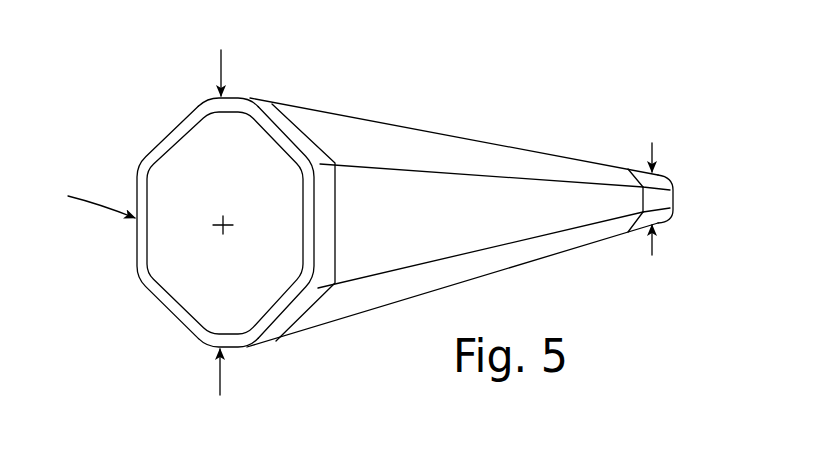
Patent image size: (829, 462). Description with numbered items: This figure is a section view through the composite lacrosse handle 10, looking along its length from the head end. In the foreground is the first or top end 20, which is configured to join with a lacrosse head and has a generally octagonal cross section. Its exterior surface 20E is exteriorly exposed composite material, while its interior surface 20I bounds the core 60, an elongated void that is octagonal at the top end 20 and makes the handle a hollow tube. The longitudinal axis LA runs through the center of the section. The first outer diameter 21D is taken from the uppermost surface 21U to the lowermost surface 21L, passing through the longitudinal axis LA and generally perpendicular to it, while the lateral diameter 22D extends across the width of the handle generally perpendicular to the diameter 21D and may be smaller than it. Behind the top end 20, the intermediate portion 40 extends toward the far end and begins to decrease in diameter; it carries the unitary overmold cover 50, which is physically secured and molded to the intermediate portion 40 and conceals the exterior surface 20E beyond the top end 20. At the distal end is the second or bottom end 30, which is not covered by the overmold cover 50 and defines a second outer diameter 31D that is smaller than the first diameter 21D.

The composite lacrosse handle 10 is at (148, 67).
The top end 20 is at (198, 358).
The exterior surface of the top end 20E is at (297, 137).
The interior surface of the top end 20I is at (172, 148).
The uppermost surface 21U is at (252, 98).
The lowermost surface 21L is at (252, 347).
The first outer diameter 21D is at (224, 212).
The lateral diameter 22D is at (81, 201).
The core 60 is at (200, 260).
The longitudinal axis LA is at (222, 229).
The intermediate portion 40 is at (410, 108).
The overmold cover 50 is at (532, 235).
The bottom end 30 is at (685, 218).
The second outer diameter 31D is at (654, 187).